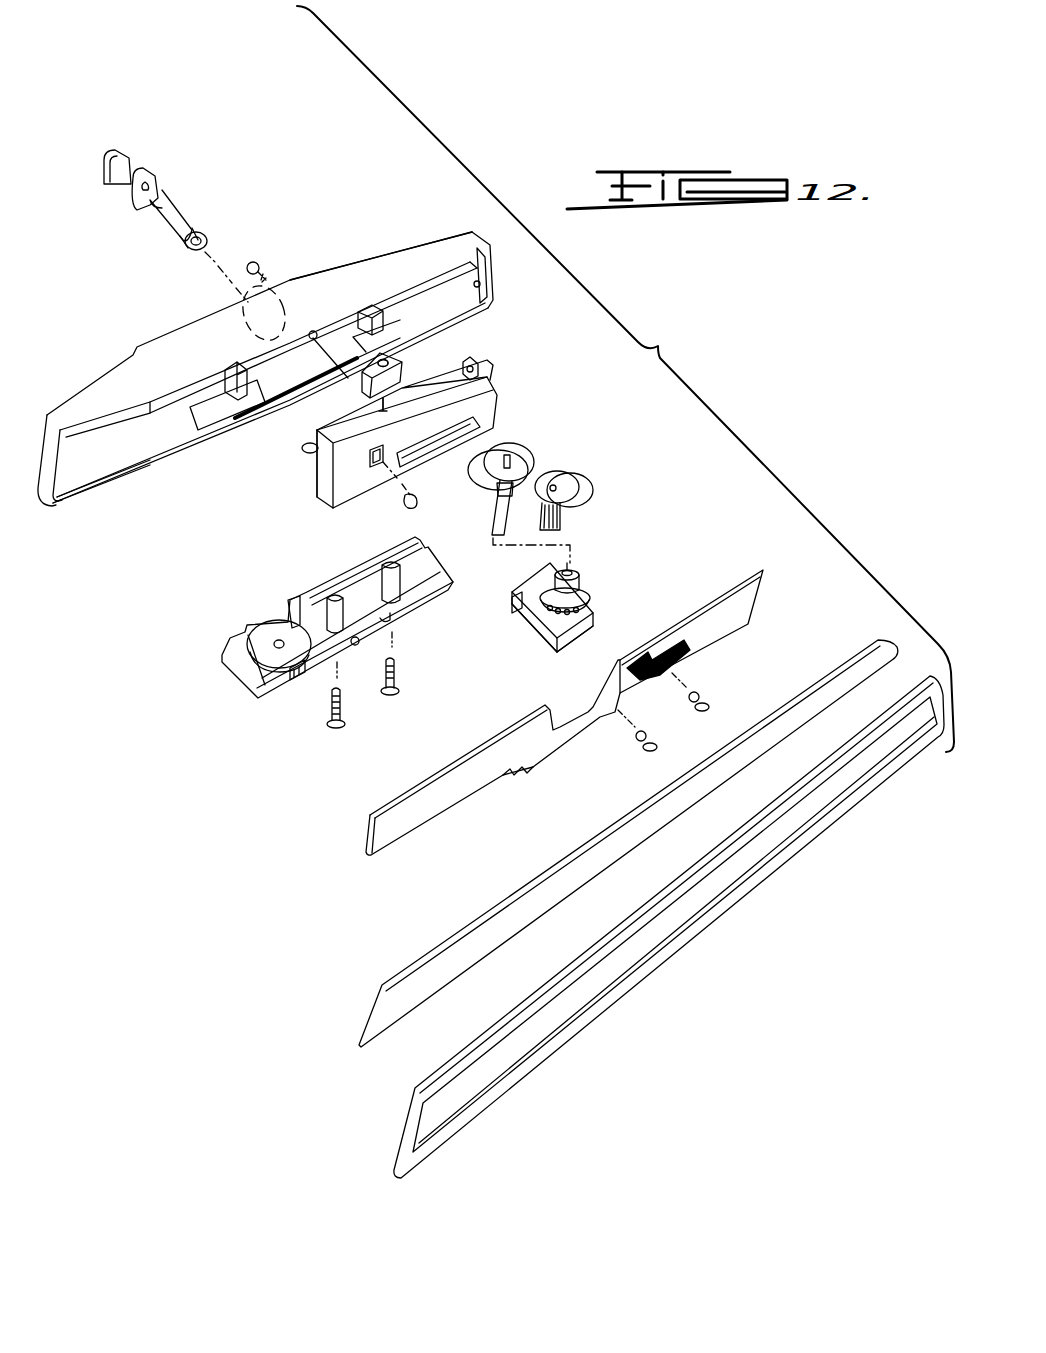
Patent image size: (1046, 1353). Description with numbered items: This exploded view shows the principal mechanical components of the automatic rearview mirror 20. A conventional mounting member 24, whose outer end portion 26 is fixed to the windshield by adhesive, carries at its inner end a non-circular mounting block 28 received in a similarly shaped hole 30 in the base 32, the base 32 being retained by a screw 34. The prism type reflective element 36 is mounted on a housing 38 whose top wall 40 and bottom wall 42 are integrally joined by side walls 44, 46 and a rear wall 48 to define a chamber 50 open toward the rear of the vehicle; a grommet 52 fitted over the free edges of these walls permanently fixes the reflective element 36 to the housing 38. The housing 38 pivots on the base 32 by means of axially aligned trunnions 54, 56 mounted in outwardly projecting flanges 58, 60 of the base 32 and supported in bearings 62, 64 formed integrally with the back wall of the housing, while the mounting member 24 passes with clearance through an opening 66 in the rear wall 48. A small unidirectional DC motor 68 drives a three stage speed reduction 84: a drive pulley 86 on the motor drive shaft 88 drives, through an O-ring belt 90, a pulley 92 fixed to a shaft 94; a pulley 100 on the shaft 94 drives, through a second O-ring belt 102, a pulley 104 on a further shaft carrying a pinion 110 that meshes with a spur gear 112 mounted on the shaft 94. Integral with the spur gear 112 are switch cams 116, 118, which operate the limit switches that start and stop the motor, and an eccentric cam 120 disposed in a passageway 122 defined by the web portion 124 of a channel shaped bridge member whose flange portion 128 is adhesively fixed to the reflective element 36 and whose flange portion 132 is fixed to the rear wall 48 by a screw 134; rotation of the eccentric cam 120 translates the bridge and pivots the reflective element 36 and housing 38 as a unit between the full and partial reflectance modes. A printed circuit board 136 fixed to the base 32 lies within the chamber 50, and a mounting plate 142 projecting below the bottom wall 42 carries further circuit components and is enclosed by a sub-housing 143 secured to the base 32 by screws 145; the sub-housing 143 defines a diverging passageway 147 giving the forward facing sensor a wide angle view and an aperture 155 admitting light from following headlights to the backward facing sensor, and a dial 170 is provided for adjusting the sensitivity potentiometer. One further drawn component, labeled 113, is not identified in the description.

The automatic rearview mirror 20 is at (421, 246).
The mounting member 24 is at (186, 210).
The outer end portion 26 is at (147, 170).
The mounting block 28 is at (205, 236).
The hole 30 is at (348, 495).
The base 32 is at (473, 395).
The screw 34 is at (405, 505).
The prism type reflective element 36 is at (372, 1003).
The housing 38 is at (350, 277).
The top wall 40 is at (160, 338).
The bottom wall 42 is at (132, 453).
The side wall 44 is at (45, 452).
The side wall 46 is at (496, 272).
The rear wall 48 is at (103, 443).
The chamber 50 is at (482, 284).
The grommet 52 is at (400, 1130).
The trunnion 54 is at (483, 362).
The trunnion 56 is at (302, 448).
The flange 58 is at (400, 372).
The flange 60 is at (320, 416).
The bearing 62 is at (392, 306).
The bearing 64 is at (187, 408).
The opening 66 is at (288, 282).
The unidirectional DC motor 68 is at (386, 358).
The three stage speed reduction 84 is at (560, 454).
The drive pulley 86 is at (400, 392).
The drive shaft 88 is at (400, 412).
The O-ring belt 90 is at (470, 478).
The pulley 92 is at (520, 448).
The shaft 94 is at (506, 453).
The pulley 100 is at (495, 495).
The O-ring belt 102 is at (590, 486).
The pulley 104 is at (568, 474).
The pinion 110 is at (560, 518).
The spur gear 112 is at (587, 592).
The hole 113 is at (357, 645).
The switch cam 116 is at (570, 570).
The switch cam 118 is at (580, 585).
The eccentric cam 120 is at (547, 638).
The passageway 122 is at (540, 622).
The web portion 124 is at (590, 605).
The flange portion 128 is at (573, 640).
The flange portion 132 is at (512, 602).
The screw 134 is at (263, 263).
The printed circuit board 136 is at (402, 812).
The mounting plate 142 is at (537, 771).
The sub-housing 143 is at (267, 695).
The screws 145 is at (380, 694).
The diverging passageway 147 is at (290, 617).
The aperture 155 is at (393, 618).
The dial 170 is at (297, 678).